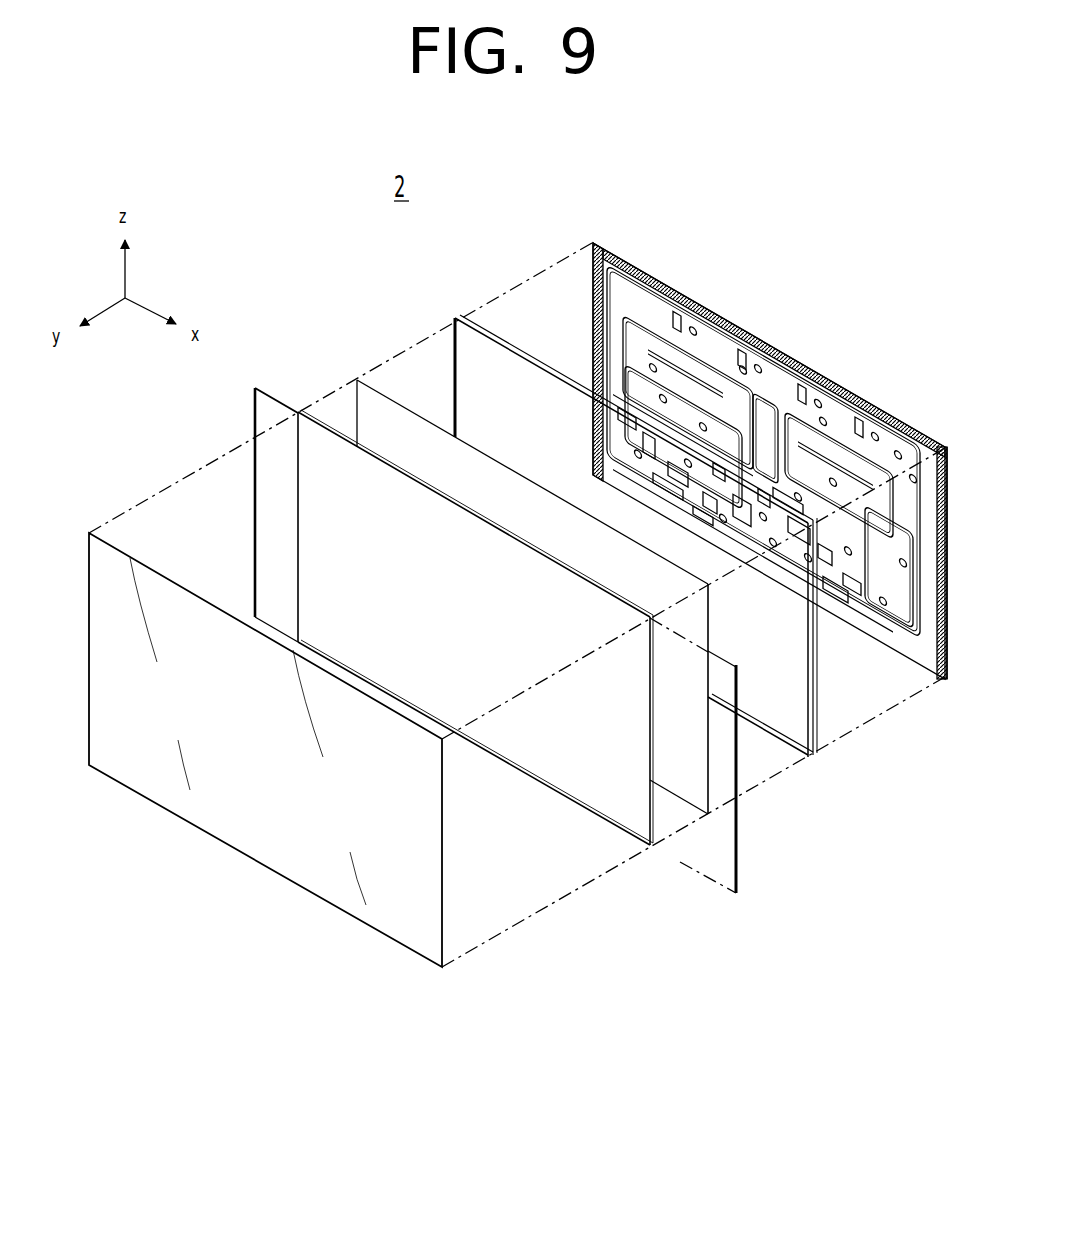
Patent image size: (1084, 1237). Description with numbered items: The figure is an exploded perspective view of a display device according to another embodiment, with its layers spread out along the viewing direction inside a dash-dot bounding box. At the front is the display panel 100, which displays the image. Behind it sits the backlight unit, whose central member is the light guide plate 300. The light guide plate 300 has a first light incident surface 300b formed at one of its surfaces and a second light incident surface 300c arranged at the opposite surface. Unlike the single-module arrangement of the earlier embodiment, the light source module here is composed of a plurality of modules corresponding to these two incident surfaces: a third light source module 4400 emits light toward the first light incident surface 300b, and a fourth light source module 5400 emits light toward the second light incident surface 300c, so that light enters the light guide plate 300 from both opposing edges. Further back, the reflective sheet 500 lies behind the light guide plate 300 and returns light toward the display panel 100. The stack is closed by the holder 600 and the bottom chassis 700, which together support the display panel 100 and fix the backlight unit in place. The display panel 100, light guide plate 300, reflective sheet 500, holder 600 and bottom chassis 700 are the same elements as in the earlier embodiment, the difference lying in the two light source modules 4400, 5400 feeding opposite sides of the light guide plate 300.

The display panel 100 is at (449, 978).
The light guide plate 300 is at (480, 638).
The first light incident surface 300b is at (298, 435).
The second light incident surface 300c is at (659, 808).
The reflective sheet 500 is at (714, 753).
The holder 600 is at (816, 765).
The bottom chassis 700 is at (768, 336).
The third light source module 4400 is at (250, 410).
The fourth light source module 5400 is at (744, 872).